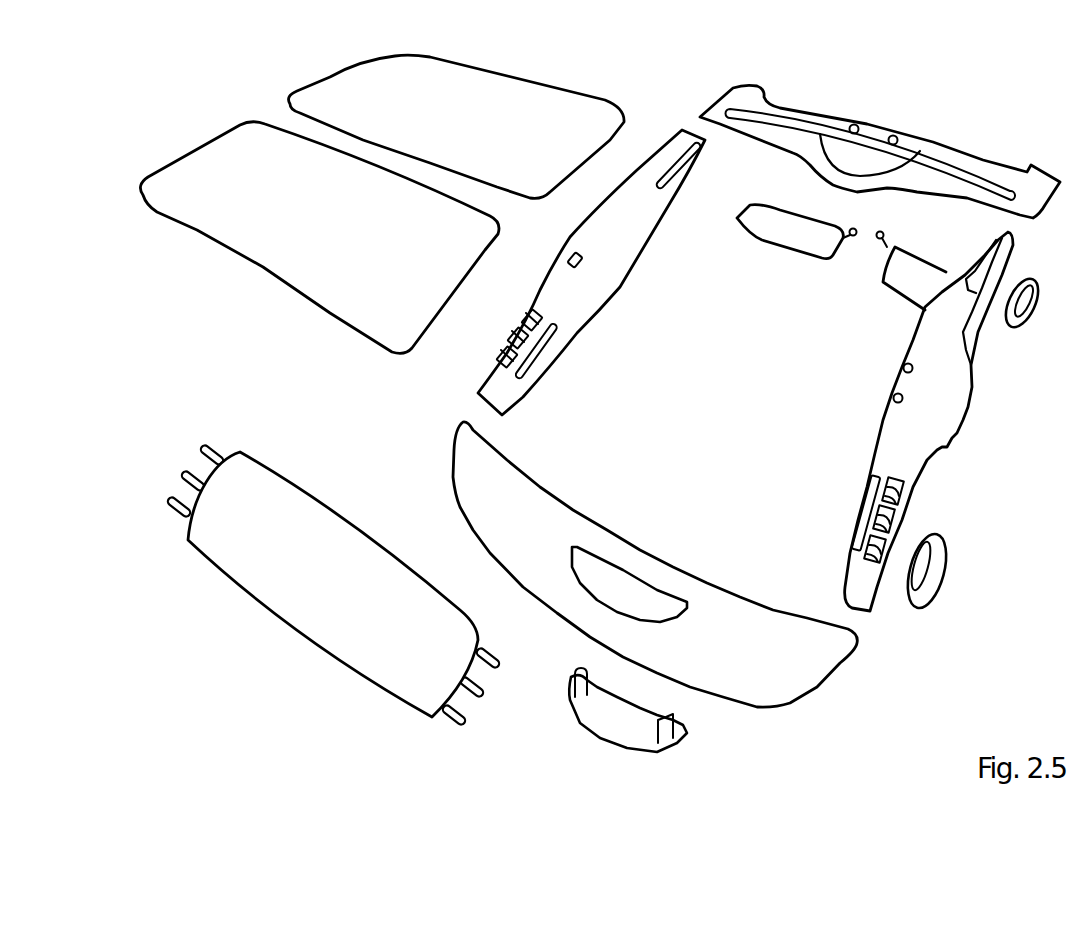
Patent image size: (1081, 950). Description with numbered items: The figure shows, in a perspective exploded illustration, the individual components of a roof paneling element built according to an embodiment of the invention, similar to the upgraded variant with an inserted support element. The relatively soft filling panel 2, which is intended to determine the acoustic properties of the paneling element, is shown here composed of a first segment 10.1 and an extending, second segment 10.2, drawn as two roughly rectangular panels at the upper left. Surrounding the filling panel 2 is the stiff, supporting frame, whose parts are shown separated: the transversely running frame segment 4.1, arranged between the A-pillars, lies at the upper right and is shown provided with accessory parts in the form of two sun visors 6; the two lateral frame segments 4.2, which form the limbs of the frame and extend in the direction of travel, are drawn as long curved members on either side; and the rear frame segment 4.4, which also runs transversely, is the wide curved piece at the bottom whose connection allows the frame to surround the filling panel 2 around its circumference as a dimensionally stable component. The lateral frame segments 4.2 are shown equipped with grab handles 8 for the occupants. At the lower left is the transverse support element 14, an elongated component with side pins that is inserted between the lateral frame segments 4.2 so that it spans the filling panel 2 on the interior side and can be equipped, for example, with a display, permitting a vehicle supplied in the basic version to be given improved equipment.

The filling panel 2 is at (273, 293).
The frame segment 4.1 is at (950, 162).
The lateral frame segments 4.2 is at (577, 302).
The rear frame segment 4.4 is at (793, 663).
The sun visors 6 is at (797, 230).
The grab handles 8 is at (1020, 306).
The first segment 10.1 is at (493, 125).
The second segment 10.2 is at (368, 232).
The transverse support element 14 is at (313, 593).